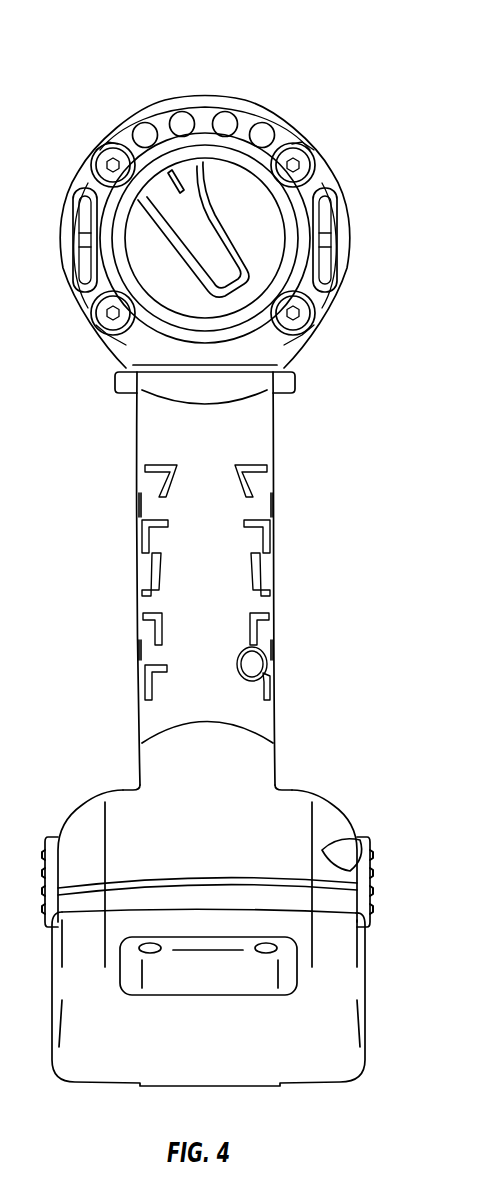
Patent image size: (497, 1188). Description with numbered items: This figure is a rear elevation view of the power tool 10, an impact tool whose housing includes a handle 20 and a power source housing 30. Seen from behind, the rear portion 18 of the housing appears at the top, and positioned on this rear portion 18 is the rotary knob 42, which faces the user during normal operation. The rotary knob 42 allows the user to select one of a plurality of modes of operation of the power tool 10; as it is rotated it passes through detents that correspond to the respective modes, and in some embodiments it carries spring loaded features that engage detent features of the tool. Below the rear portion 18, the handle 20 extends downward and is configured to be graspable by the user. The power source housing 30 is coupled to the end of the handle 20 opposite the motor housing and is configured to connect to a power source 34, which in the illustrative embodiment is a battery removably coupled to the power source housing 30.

The power tool 10 is at (301, 67).
The rear portion 18 is at (318, 176).
The handle 20 is at (264, 437).
The power source housing 30 is at (300, 790).
The power source 34 is at (358, 977).
The rotary knob 42 is at (247, 190).